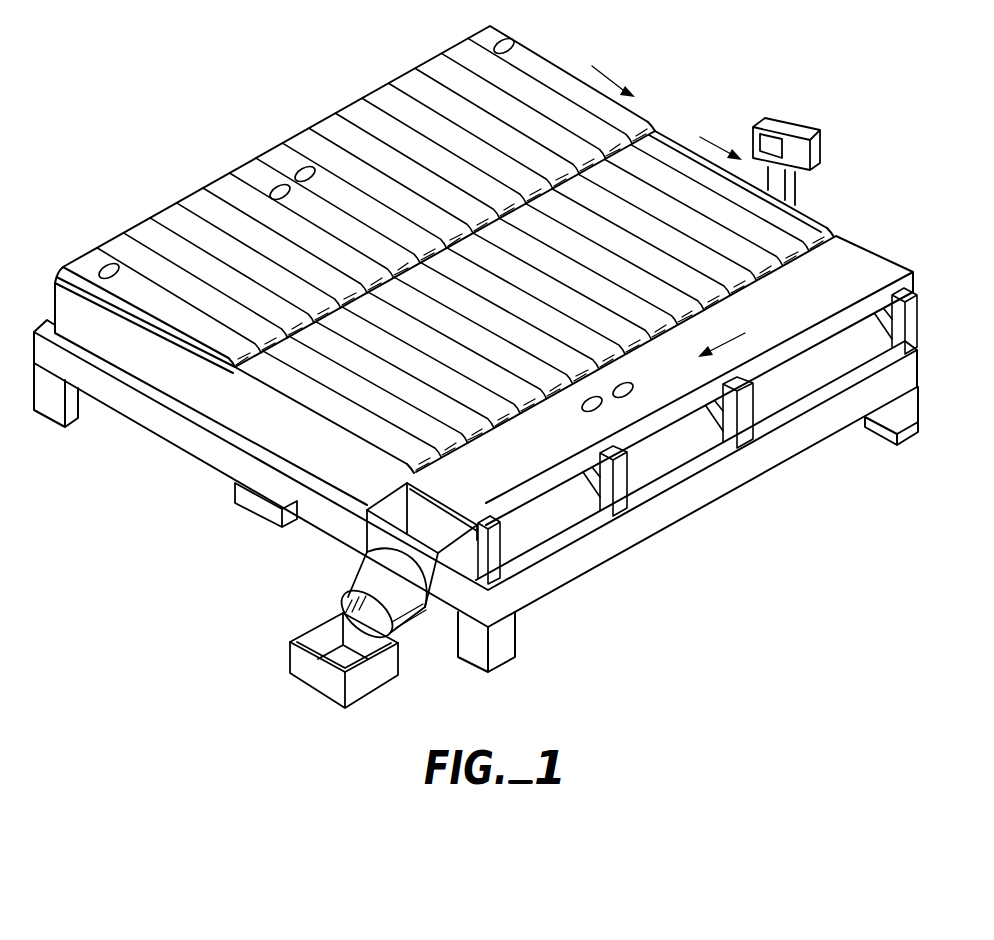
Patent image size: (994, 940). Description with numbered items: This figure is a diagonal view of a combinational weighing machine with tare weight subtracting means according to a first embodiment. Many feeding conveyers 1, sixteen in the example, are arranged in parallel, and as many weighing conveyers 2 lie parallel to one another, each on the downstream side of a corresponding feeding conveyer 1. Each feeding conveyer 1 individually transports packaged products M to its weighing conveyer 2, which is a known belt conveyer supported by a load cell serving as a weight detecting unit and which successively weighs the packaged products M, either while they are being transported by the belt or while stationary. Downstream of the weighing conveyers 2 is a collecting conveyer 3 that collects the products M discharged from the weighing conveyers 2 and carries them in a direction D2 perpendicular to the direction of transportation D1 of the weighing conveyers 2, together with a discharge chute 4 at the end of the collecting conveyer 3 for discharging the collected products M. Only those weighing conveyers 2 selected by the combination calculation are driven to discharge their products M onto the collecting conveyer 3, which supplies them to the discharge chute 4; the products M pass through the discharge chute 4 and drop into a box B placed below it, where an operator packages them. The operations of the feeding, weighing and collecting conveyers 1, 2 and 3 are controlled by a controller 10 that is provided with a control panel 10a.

The feeding conveyer 1 is at (383, 93).
The weighing conveyer 2 is at (670, 147).
The collecting conveyer 3 is at (855, 258).
The discharge chute 4 is at (452, 578).
The controller 10 is at (257, 507).
The control panel 10a is at (793, 118).
The packaged products M is at (271, 183).
The box B is at (380, 674).
The direction of transportation D1 is at (718, 143).
The direction D2 is at (725, 342).